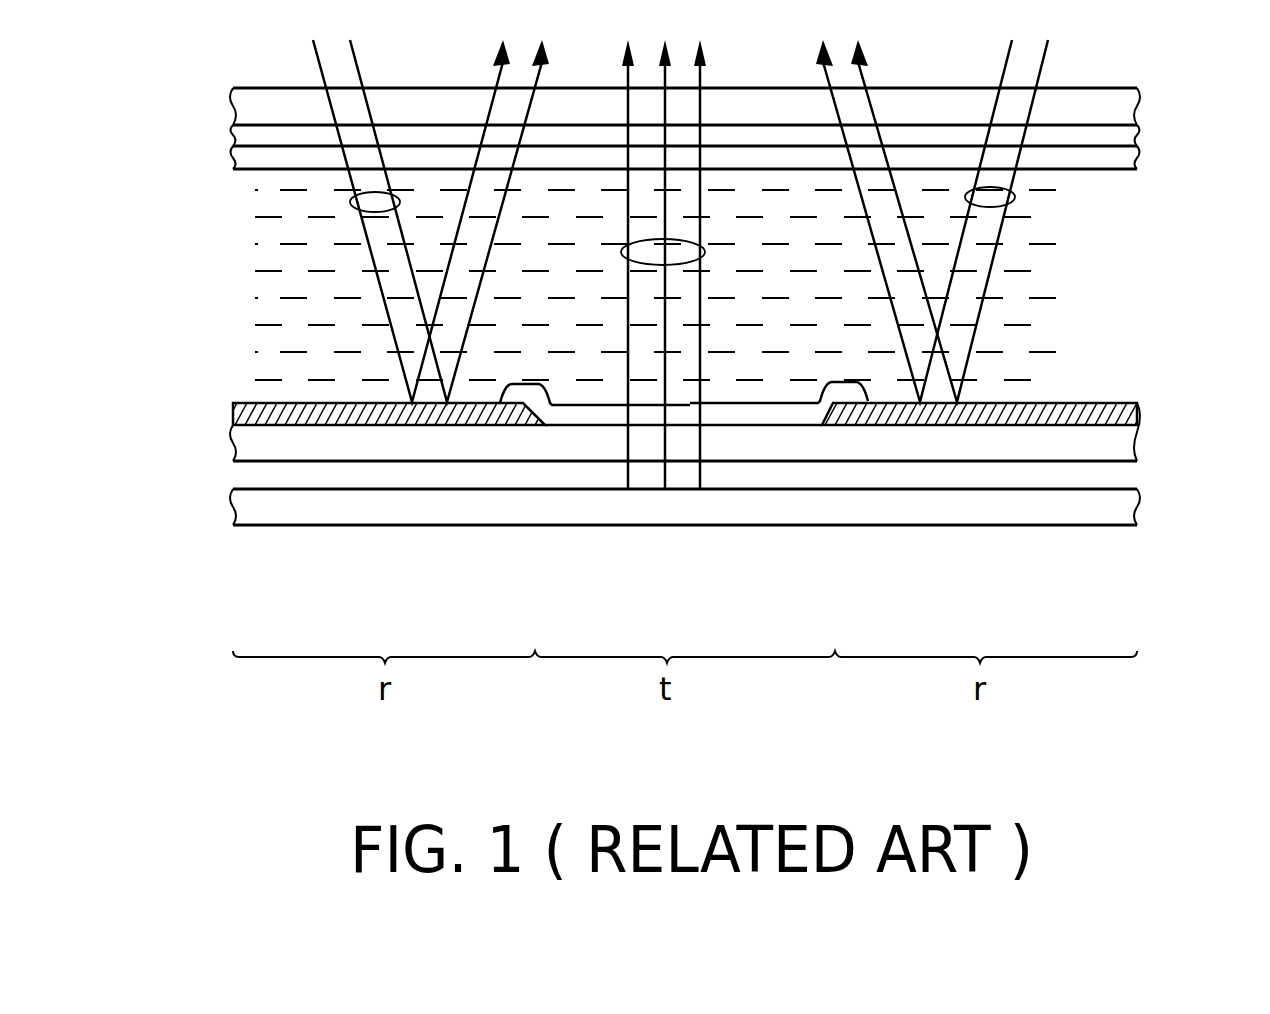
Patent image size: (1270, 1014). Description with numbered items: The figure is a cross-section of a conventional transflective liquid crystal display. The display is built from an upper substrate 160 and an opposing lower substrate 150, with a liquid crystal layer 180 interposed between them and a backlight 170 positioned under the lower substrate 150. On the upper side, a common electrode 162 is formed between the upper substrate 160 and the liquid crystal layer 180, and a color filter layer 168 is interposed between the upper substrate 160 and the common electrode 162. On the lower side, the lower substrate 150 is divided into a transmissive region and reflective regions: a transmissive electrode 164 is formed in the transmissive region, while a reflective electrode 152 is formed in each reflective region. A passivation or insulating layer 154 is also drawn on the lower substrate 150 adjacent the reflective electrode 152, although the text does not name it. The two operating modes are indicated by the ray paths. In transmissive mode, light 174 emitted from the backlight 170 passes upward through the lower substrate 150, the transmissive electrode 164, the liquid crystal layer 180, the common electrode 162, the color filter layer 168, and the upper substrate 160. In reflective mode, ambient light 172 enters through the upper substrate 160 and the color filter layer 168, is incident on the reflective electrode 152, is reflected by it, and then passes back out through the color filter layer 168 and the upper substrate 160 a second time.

The lower substrate 150 is at (1122, 443).
The reflective electrode 152 is at (343, 402).
The passivation layer 154 is at (813, 425).
The upper substrate 160 is at (1120, 103).
The common electrode 162 is at (1120, 155).
The transmissive electrode 164 is at (552, 412).
The color filter layer 168 is at (1120, 134).
The backlight 170 is at (1122, 507).
The ambient light 172 is at (350, 202).
The light 174 is at (705, 252).
The liquid crystal layer 180 is at (207, 288).